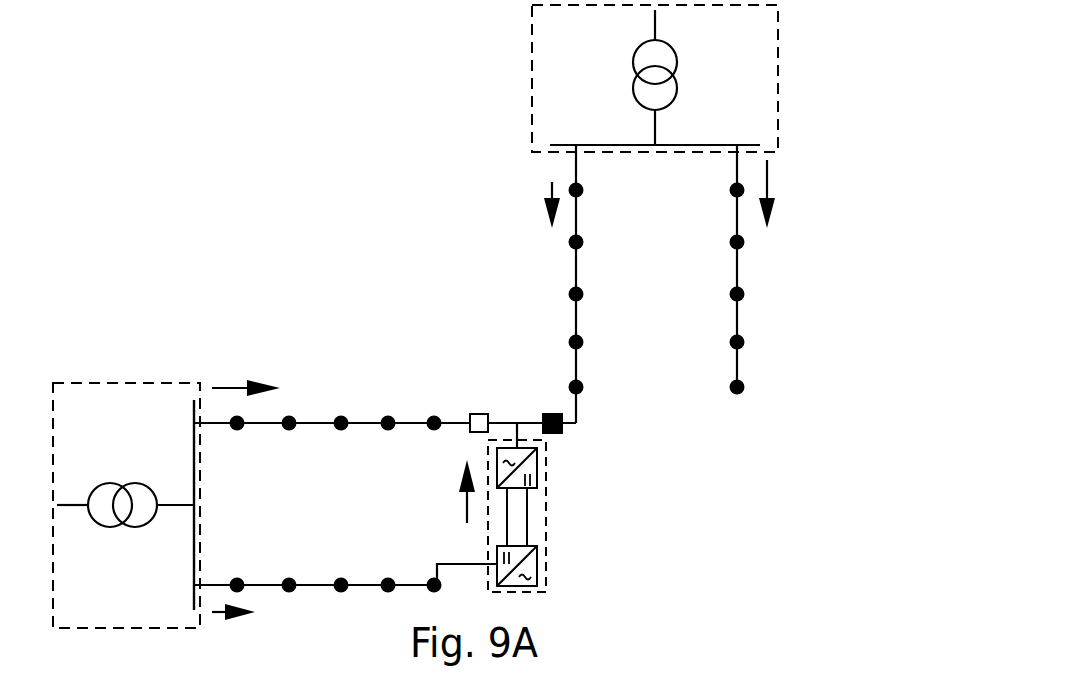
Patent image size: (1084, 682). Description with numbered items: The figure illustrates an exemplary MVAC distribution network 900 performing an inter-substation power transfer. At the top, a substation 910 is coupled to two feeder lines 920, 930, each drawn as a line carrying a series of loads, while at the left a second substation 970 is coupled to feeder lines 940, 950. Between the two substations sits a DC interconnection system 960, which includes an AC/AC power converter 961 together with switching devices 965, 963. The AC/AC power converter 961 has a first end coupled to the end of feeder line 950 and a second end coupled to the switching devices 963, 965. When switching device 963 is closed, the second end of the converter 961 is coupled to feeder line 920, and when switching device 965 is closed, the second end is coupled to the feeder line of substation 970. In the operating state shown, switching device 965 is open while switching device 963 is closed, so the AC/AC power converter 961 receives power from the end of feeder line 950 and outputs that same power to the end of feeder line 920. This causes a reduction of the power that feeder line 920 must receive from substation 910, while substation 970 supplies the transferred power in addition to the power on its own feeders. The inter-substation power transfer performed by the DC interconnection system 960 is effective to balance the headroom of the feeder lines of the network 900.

The MVAC distribution network 900 is at (898, 118).
The substation 910 is at (778, 43).
The feeder line 920 is at (576, 266).
The feeder line 930 is at (737, 267).
The feeder line 940 is at (363, 421).
The feeder line 950 is at (363, 583).
The DC interconnection system 960 is at (555, 514).
The AC/AC power converter 961 is at (600, 572).
The switching device 963 is at (553, 413).
The switching device 965 is at (478, 414).
The substation 970 is at (75, 383).